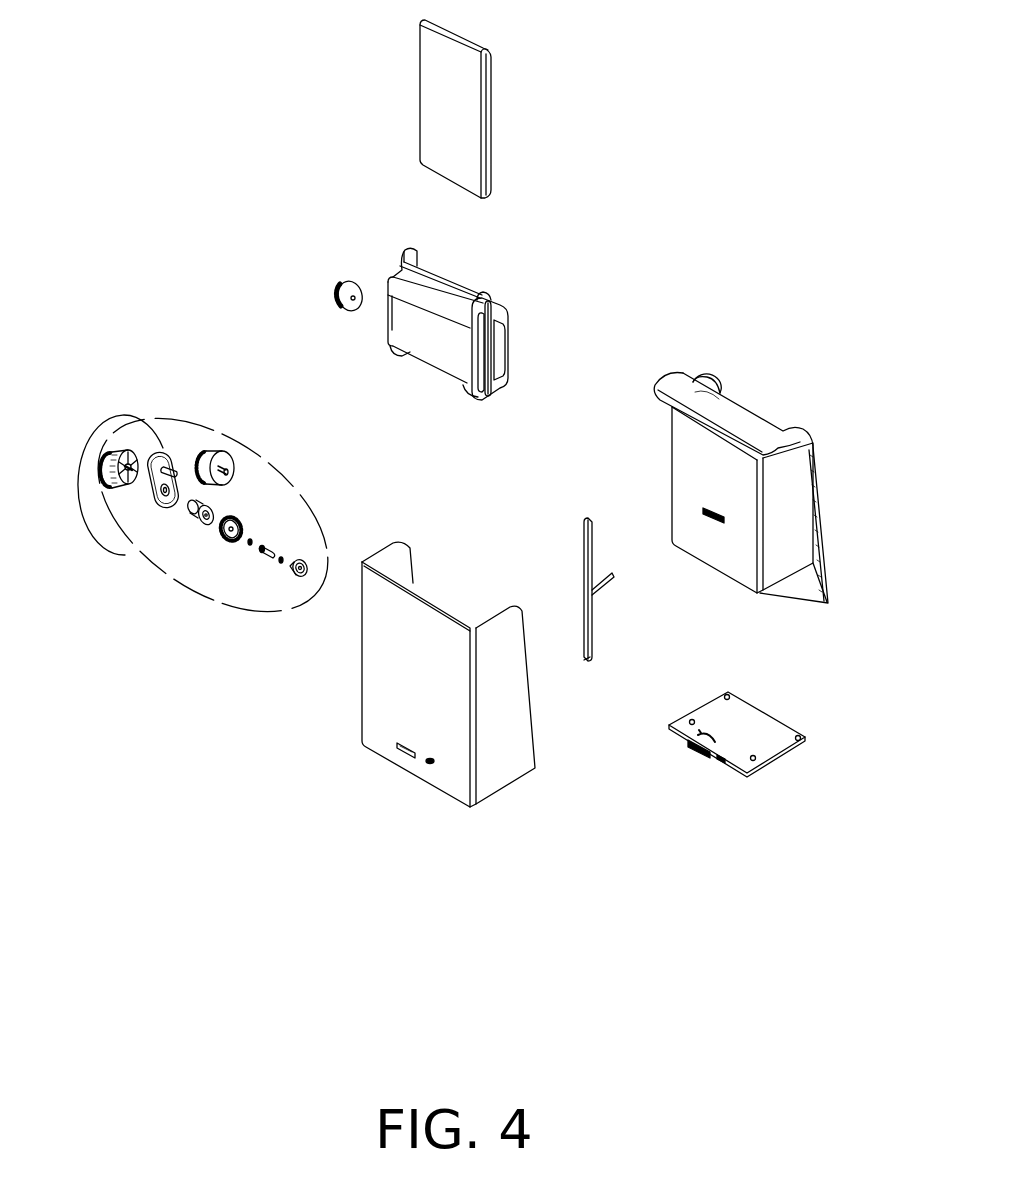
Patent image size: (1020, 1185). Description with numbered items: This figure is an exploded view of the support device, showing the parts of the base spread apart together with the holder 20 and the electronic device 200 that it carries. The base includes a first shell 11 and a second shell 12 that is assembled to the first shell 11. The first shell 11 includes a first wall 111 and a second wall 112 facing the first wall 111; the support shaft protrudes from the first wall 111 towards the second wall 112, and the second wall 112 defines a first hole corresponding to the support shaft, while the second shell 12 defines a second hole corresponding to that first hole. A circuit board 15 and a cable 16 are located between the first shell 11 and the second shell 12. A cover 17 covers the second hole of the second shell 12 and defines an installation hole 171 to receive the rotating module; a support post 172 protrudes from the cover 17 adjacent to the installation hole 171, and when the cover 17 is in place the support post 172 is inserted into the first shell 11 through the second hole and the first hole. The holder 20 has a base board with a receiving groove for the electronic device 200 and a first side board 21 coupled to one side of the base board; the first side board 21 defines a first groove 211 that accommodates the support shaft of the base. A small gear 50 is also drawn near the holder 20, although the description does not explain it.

The electronic device 200 is at (430, 133).
The holder 20 is at (442, 295).
The first side board 21 is at (500, 332).
The first groove 211 is at (489, 362).
The gear 50 is at (341, 306).
The cover 17 is at (102, 465).
The installation hole 171 is at (163, 494).
The support post 172 is at (165, 474).
The first shell 11 is at (762, 458).
The first wall 111 is at (792, 502).
The second wall 112 is at (710, 390).
The second shell 12 is at (498, 775).
The cable 16 is at (588, 620).
The circuit board 15 is at (763, 728).